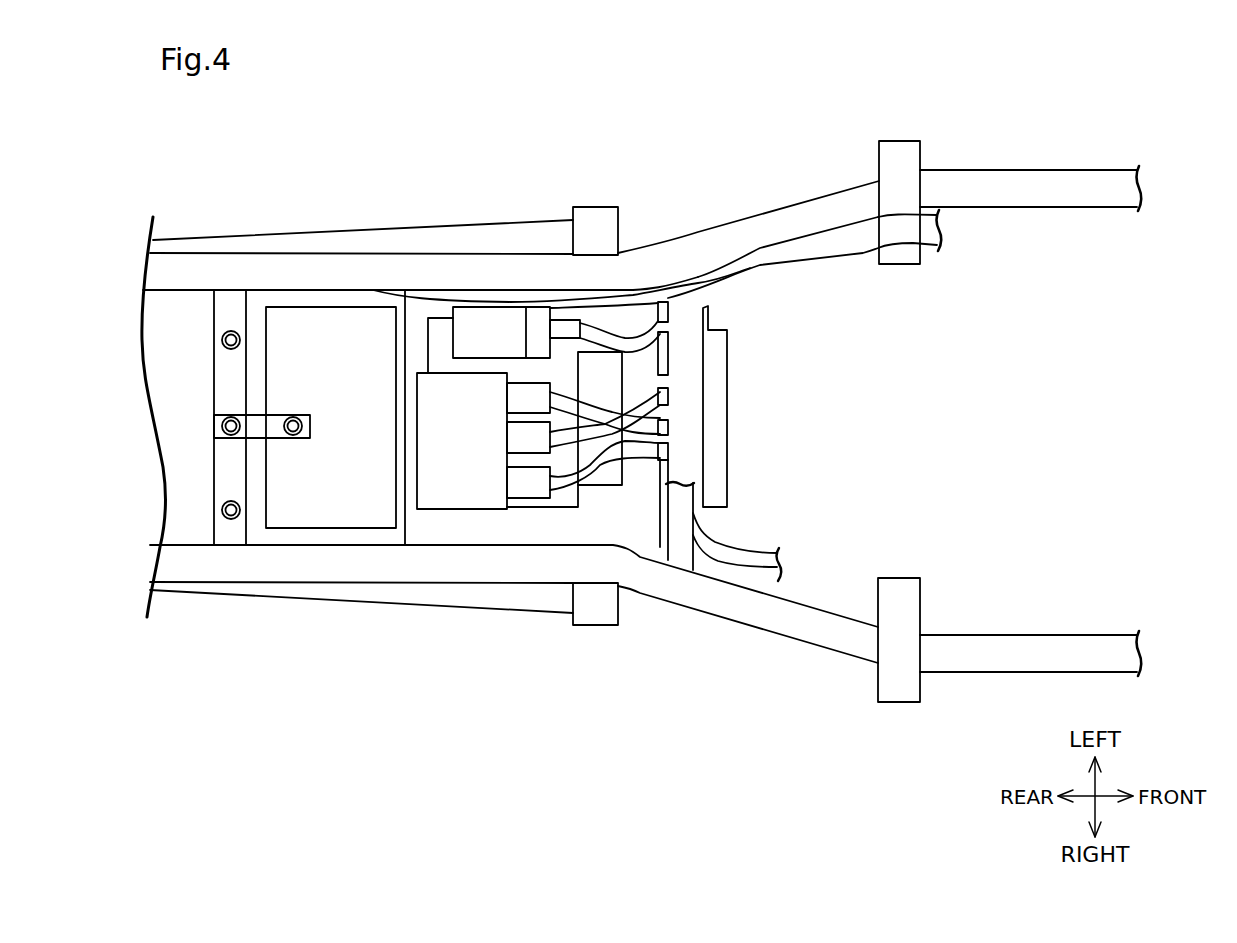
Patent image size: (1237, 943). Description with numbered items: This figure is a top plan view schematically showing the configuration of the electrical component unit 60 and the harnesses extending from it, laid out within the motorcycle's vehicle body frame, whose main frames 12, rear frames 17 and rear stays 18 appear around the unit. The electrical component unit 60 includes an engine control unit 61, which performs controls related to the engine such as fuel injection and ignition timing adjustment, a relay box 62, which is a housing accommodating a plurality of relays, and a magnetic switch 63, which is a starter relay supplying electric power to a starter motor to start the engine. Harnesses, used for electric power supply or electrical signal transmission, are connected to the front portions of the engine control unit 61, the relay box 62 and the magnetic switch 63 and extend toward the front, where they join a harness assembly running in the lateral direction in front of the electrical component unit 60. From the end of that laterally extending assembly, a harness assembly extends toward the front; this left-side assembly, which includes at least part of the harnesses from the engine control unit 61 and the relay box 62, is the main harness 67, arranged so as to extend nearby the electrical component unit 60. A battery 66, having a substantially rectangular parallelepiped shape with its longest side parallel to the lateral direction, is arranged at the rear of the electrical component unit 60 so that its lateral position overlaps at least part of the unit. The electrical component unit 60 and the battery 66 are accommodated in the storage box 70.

The main frame 12 is at (1066, 196).
The rear frame 17 is at (743, 233).
The rear stay 18 is at (453, 232).
The electrical component unit 60 is at (542, 450).
The engine control unit 61 is at (563, 498).
The relay box 62 is at (467, 500).
The magnetic switch 63 is at (500, 323).
The battery 66 is at (326, 518).
The main harness 67 is at (773, 273).
The storage box 70 is at (638, 537).